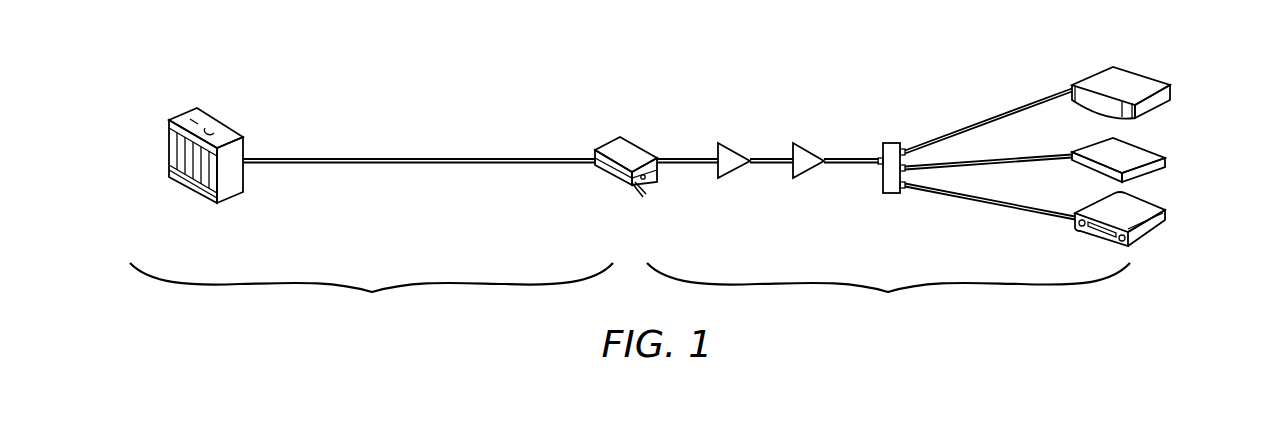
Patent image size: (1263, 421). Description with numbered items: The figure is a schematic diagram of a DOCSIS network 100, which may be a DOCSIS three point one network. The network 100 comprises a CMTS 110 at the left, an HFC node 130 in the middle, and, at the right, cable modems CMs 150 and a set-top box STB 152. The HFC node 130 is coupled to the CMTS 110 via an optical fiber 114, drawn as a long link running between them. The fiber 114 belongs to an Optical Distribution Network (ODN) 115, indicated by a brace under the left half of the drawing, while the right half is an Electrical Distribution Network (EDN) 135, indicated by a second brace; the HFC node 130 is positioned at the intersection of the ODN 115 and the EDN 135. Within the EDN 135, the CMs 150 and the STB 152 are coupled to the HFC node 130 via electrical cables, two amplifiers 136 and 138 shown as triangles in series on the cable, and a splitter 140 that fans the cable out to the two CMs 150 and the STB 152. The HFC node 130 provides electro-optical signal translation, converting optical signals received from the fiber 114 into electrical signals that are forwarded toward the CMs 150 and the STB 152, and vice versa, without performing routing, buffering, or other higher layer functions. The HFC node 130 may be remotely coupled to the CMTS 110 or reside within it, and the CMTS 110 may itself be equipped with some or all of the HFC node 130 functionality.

The DOCSIS network 100 is at (163, 72).
The CMTS 110 is at (218, 120).
The optical fiber 114 is at (452, 158).
The Optical Distribution Network (ODN) 115 is at (371, 289).
The HFC node 130 is at (637, 147).
The Electrical Distribution Network (EDN) 135 is at (888, 289).
The amplifier 136 is at (722, 177).
The amplifier 138 is at (797, 177).
The splitter 140 is at (893, 194).
The CM 150 is at (1143, 77).
The Set-Top Box (STB) 152 is at (1148, 237).